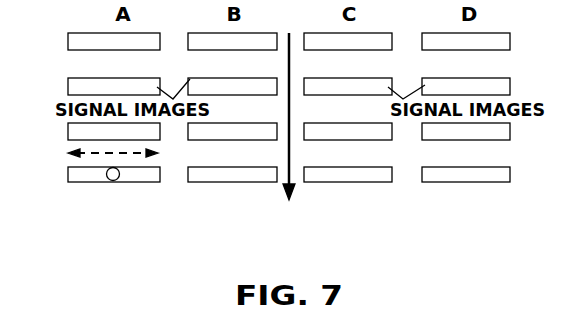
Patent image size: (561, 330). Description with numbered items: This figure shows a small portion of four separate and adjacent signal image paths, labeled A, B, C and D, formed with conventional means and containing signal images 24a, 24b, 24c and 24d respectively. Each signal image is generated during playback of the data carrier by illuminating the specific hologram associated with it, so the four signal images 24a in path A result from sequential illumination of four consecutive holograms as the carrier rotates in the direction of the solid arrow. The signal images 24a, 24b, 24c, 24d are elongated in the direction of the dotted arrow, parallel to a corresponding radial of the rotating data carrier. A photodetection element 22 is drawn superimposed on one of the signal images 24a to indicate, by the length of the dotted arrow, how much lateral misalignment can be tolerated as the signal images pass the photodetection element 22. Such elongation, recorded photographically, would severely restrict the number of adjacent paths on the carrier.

The photodetection element 22 is at (115, 181).
The signal images 24a is at (149, 183).
The signal images 24b is at (270, 183).
The signal images 24c is at (386, 183).
The signal images 24d is at (503, 183).